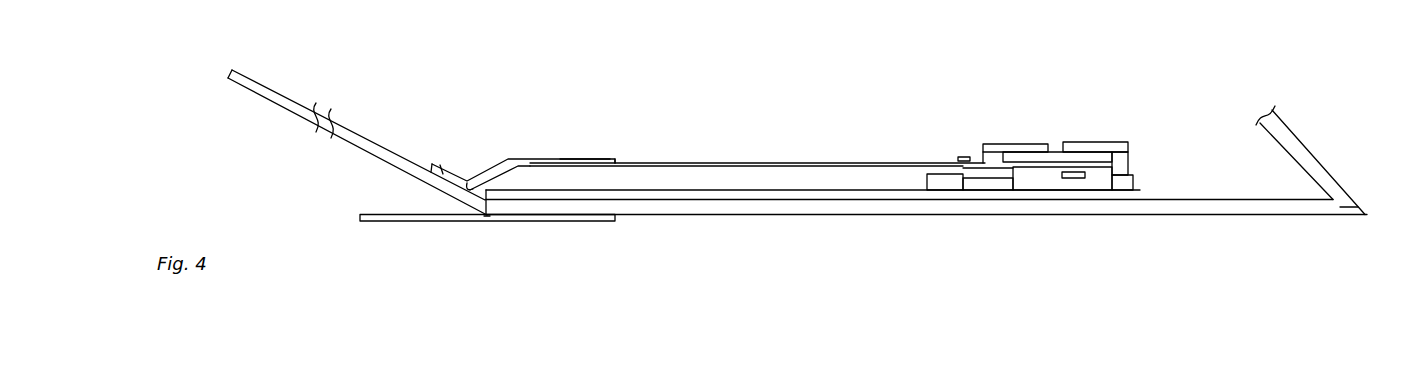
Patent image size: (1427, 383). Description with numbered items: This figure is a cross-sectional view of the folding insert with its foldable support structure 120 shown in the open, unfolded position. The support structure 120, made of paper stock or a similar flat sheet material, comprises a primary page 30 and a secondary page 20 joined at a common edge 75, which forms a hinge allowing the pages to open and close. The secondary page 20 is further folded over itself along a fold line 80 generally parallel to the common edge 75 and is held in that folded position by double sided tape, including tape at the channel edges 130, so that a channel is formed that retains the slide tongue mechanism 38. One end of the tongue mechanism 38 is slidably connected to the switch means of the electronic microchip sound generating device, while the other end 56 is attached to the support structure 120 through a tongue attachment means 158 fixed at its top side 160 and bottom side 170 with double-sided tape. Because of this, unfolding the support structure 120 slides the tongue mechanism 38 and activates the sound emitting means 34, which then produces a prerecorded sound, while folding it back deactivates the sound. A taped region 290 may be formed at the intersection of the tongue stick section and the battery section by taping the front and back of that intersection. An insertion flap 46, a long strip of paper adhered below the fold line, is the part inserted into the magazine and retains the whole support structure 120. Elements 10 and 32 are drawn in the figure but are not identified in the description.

The arm 10 is at (1288, 137).
The secondary page 20 is at (762, 202).
The primary page 30 is at (272, 89).
The component block 32 is at (1130, 183).
The sound emitting means 34 is at (1035, 180).
The slide tongue mechanism 38 is at (738, 163).
The insertion flap 46 is at (400, 222).
The other end of the tongue mechanism 56 is at (490, 155).
The common edge 75 is at (487, 224).
The fold line 80 is at (1352, 203).
The foldable support structure 120 is at (256, 166).
The channel edges 130 is at (1015, 144).
The tongue attachment means 158 is at (588, 152).
The top side 160 is at (616, 154).
The bottom side 170 is at (386, 192).
The taped intersection 290 is at (484, 190).